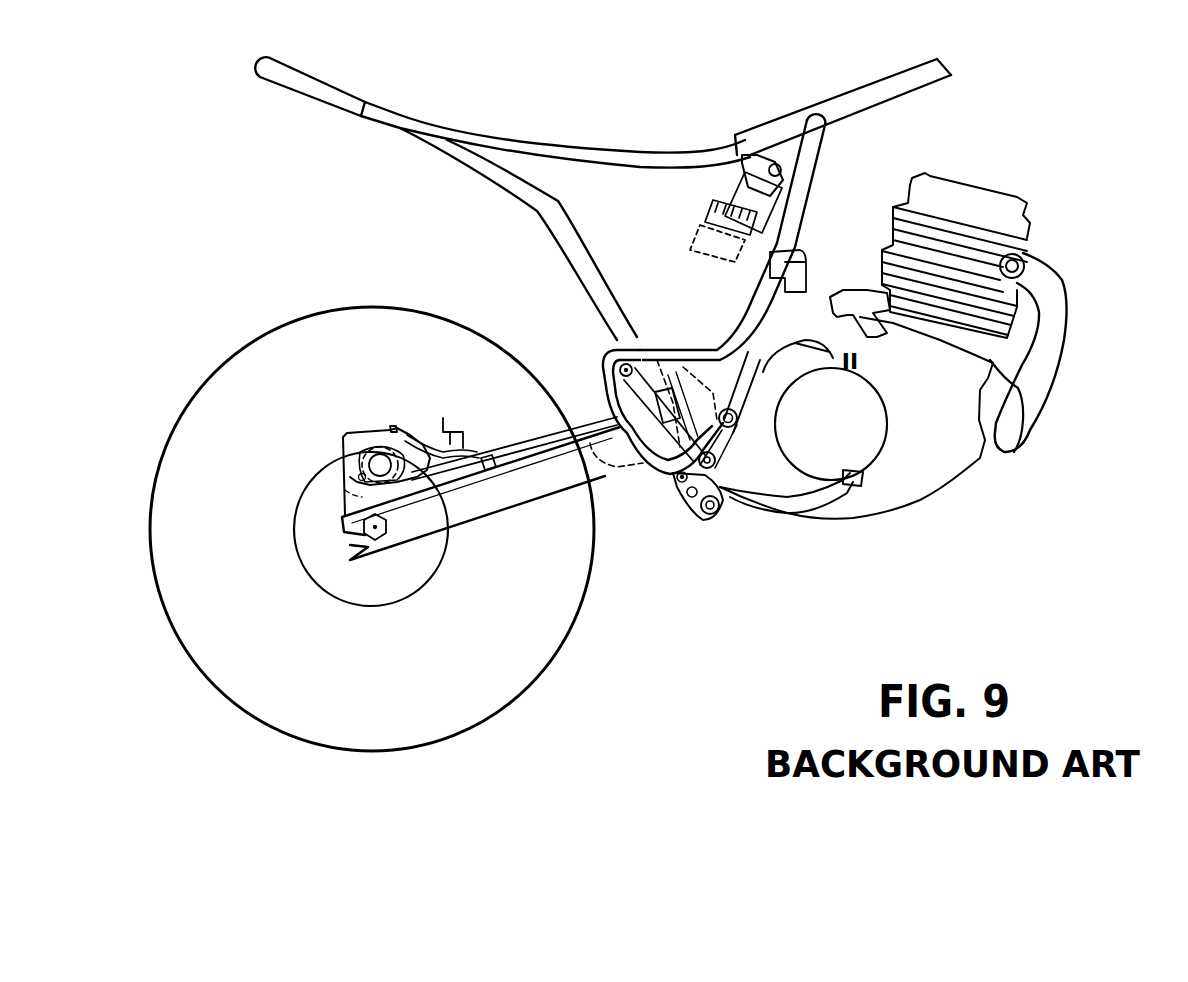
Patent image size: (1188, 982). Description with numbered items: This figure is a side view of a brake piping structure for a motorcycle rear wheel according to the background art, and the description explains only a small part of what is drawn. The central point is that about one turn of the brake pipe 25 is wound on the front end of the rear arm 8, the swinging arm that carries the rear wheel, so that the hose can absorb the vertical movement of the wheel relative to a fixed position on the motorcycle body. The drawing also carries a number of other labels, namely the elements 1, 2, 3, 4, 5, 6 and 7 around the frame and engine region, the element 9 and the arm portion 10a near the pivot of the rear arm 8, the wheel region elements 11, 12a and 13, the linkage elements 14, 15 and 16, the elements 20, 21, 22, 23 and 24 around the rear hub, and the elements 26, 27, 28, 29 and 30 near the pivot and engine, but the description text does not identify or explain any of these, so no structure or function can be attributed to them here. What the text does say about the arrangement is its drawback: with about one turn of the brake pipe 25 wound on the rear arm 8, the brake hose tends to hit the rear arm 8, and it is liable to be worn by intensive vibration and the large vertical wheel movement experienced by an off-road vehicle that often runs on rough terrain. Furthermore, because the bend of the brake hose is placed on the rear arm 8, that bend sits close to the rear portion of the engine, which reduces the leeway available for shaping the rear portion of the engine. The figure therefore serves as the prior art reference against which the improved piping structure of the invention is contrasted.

The body frame 1 is at (845, 83).
The exhaust pipe 2 is at (1043, 258).
The rear frame tube 3 is at (798, 218).
The handlebar end 4 is at (955, 72).
The upper frame tube 5 is at (606, 152).
The down tube 6 is at (560, 237).
The engine hanger 7 is at (778, 384).
The rear arm 8 is at (490, 522).
The pivot shaft 9 is at (747, 413).
The arm portion of swing arm 10a is at (568, 490).
The rear wheel 11 is at (500, 706).
The crankcase cover 12a is at (750, 395).
The engine 13 is at (888, 502).
The link 14 is at (728, 462).
The swing arm pivot axis 15 is at (610, 470).
The link plate 16 is at (672, 352).
The brake caliper 20 is at (338, 428).
The wheel hub 21 is at (353, 593).
The brake disc 22 is at (345, 453).
The caliper piston 23 is at (375, 430).
The axle line 24 is at (350, 493).
The brake pipe 25 is at (470, 444).
The pivot bracket 26 is at (631, 325).
The cushion link 27 is at (722, 520).
The brake hose 28 is at (613, 423).
The brake pedal 29 is at (805, 495).
The cushion mount 30 is at (806, 280).